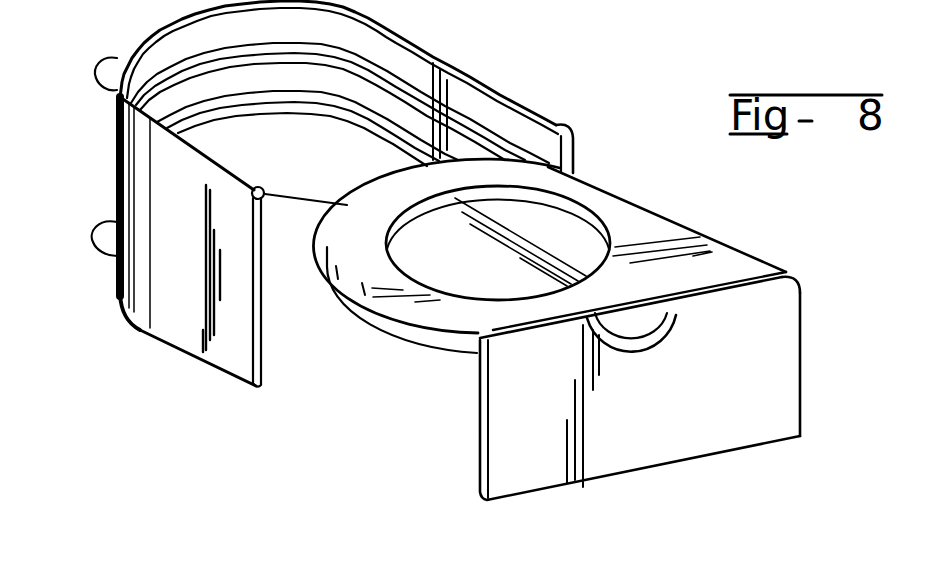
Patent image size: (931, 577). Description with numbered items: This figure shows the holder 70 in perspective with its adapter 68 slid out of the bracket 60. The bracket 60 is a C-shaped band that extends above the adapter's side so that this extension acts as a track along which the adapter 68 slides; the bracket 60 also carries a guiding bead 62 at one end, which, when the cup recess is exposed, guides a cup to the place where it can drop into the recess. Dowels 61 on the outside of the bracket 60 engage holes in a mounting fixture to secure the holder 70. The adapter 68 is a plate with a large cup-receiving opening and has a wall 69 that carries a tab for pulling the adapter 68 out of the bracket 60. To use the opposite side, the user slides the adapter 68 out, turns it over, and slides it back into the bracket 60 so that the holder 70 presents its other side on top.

The bracket 60 is at (187, 307).
The dowels 61 is at (97, 80).
The guiding bead 62 is at (573, 129).
The adapter 68 is at (603, 495).
The wall 69 is at (740, 403).
The holder 70 is at (815, 347).